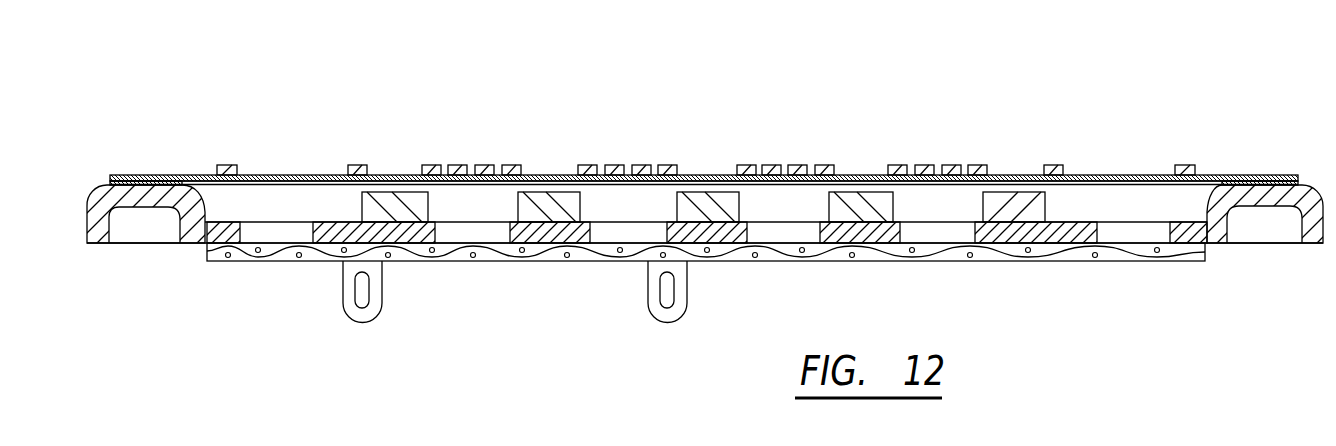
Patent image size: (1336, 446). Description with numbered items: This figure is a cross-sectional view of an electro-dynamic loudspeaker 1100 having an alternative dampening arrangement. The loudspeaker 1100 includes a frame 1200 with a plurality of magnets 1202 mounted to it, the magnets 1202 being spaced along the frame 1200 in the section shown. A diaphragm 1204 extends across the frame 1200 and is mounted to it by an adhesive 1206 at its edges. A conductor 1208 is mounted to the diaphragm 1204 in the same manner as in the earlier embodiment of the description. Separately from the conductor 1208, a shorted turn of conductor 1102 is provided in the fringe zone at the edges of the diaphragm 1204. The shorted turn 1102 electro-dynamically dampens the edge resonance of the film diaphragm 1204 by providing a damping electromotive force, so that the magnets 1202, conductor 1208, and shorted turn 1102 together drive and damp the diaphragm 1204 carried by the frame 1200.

The electro-dynamic loudspeaker 1100 is at (807, 146).
The shorted turn of conductor 1102 is at (228, 165).
The frame 1200 is at (193, 236).
The magnets 1202 is at (405, 200).
The diaphragm 1204 is at (322, 175).
The adhesive 1206 is at (149, 183).
The conductor 1208 is at (669, 157).